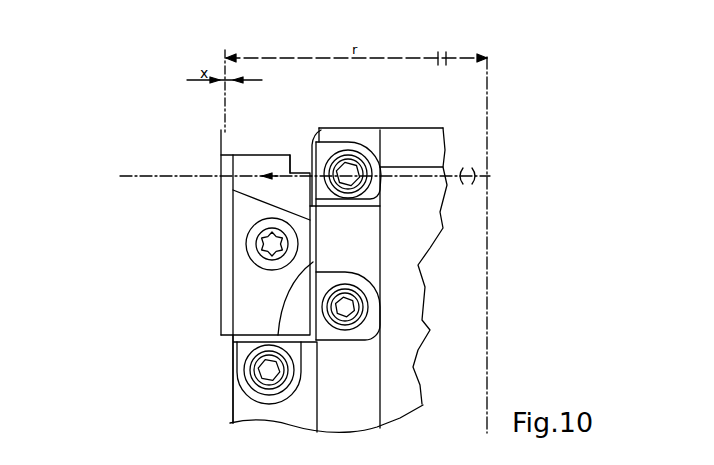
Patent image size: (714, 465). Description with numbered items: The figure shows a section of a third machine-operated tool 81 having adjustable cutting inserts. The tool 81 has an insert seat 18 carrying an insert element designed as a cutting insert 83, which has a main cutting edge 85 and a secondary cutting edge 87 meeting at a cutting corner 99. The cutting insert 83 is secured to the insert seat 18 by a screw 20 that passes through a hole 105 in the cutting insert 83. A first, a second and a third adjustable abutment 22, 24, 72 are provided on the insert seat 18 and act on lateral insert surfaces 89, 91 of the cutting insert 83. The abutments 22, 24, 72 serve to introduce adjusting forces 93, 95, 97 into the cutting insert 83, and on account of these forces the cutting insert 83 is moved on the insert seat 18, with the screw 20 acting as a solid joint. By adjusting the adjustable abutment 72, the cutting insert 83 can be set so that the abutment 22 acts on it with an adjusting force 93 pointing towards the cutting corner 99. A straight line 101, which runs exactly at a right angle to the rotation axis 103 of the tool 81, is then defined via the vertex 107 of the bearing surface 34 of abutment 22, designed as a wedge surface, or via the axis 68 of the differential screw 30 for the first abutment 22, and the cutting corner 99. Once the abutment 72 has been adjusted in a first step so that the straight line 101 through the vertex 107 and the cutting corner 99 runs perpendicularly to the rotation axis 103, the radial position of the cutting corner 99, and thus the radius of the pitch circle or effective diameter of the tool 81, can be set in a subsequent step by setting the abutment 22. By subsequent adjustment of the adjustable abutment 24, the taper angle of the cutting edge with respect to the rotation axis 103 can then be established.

The insert seat 18 is at (221, 340).
The screw 20 is at (248, 232).
The first adjustable abutment 22 is at (355, 150).
The second adjustable abutment 24 is at (370, 303).
The differential screw 30 is at (353, 148).
The bearing surface 34 is at (360, 203).
The axis 68 is at (360, 203).
The third adjustable abutment 72 is at (280, 402).
The machine-operated tool 81 is at (509, 121).
The cutting insert 83 is at (253, 298).
The main cutting edge 85 is at (225, 162).
The secondary cutting edge 87 is at (222, 235).
The lateral insert surface 89 is at (232, 195).
The lateral insert surface 91 is at (317, 258).
The adjusting force 93 is at (290, 153).
The adjusting force 95 is at (290, 304).
The adjusting force 97 is at (270, 315).
The cutting corner 99 is at (220, 170).
The straight line 101 is at (138, 170).
The rotation axis 103 is at (491, 87).
The hole 105 is at (253, 262).
The vertex 107 is at (316, 136).